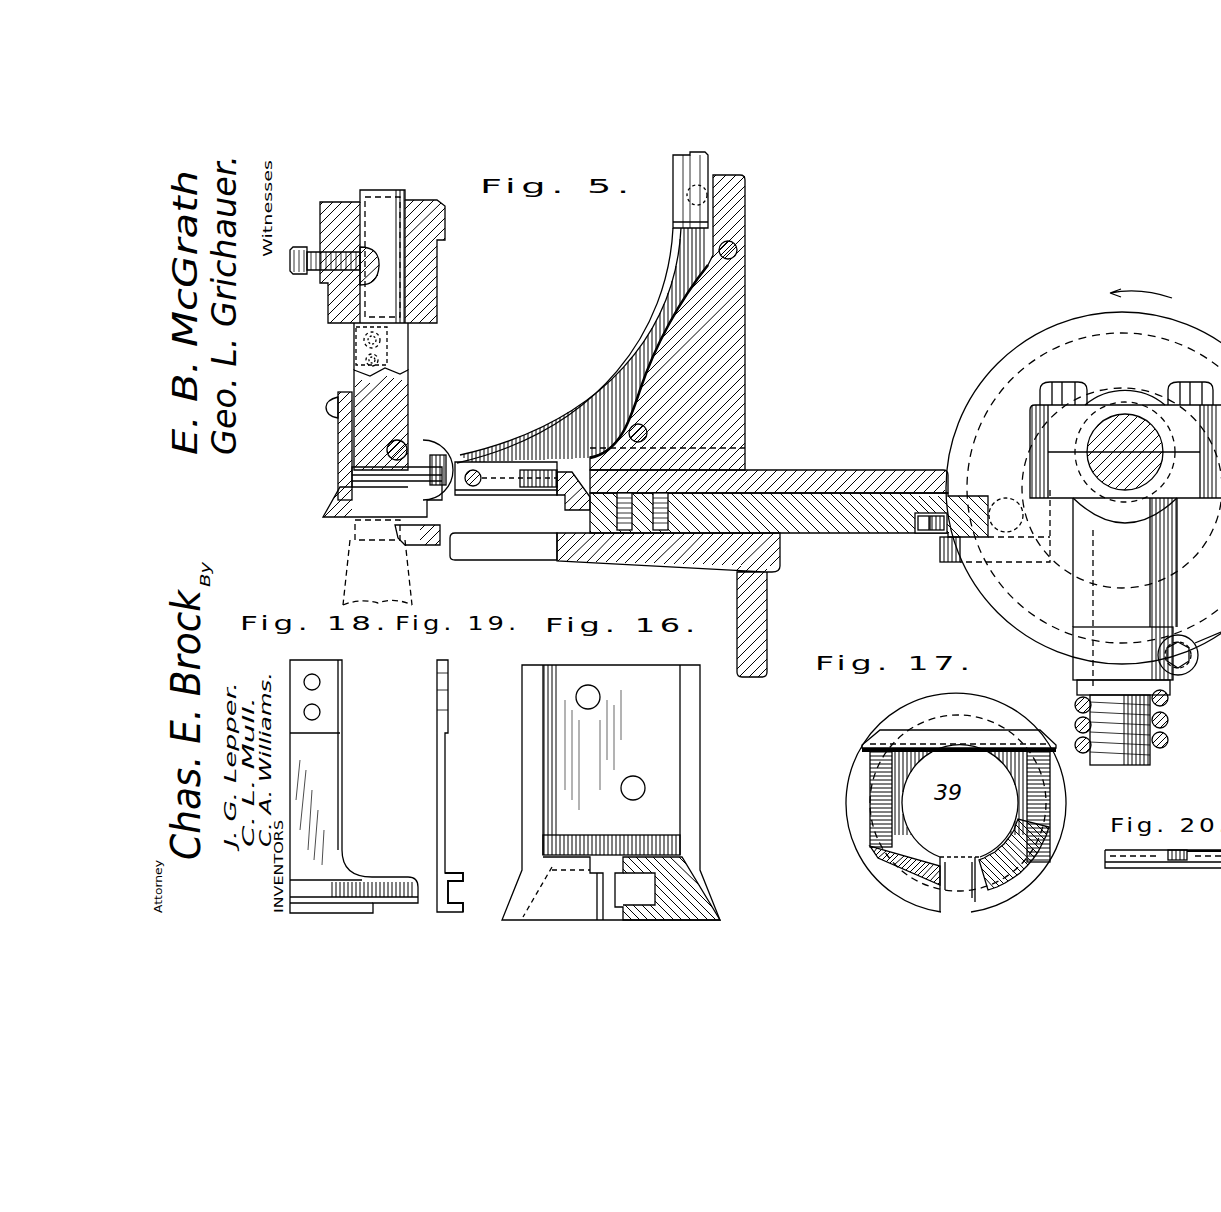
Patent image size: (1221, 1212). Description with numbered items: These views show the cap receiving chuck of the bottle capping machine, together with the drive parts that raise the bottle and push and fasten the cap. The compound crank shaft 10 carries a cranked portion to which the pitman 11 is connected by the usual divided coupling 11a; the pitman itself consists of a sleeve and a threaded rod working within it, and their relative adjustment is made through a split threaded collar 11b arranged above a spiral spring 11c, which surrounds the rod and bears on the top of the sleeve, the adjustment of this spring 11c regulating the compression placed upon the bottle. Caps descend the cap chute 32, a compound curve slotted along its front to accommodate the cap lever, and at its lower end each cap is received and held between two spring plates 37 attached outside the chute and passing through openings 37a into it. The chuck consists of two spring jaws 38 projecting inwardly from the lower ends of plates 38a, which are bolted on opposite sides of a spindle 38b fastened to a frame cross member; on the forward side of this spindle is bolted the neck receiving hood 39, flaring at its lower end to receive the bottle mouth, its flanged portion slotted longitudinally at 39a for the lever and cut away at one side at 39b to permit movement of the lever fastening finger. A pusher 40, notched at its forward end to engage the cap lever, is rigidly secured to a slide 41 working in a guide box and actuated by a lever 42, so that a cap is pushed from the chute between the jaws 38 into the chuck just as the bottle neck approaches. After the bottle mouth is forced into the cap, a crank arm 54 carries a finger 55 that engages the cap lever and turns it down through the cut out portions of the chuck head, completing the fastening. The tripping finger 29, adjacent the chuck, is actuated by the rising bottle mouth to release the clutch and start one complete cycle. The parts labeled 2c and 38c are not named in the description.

In FIG. 5, the plate 2c is at (846, 471).
In FIG. 5, the compound crank shaft 10 is at (1110, 442).
In FIG. 5, the pitman 11 is at (1128, 752).
In FIG. 5, the divided coupling 11a is at (1060, 468).
In FIG. 5, the split threaded collar 11b is at (1097, 658).
In FIG. 5, the spiral spring 11c is at (1170, 727).
In FIG. 5, the finger 29 is at (432, 546).
In FIG. 5, the cap chute 32 is at (675, 212).
In FIG. 5, the spring plates 37 is at (484, 462).
In FIG. 5, the openings 37a is at (503, 460).
In FIG. 5, the spring jaws 38 is at (410, 478).
In FIG. 18, the spring jaws 38 is at (386, 879).
In FIG. 19, the spring jaws 38 is at (448, 887).
In FIG. 20, the spring jaws 38 is at (1215, 866).
In FIG. 18, the plates 38a is at (320, 770).
In FIG. 19, the plates 38a is at (447, 764).
In FIG. 20, the plates 38a is at (1120, 865).
In FIG. 5, the spindle 38b is at (400, 346).
In FIG. 5, the bolt 38c is at (395, 447).
In FIG. 5, the neck receiving hood 39 is at (335, 500).
In FIG. 17, the neck receiving hood 39 is at (920, 740).
In FIG. 16, the neck receiving hood 39 is at (611, 792).
In FIG. 17, the longitudinal slot 39a is at (955, 880).
In FIG. 16, the longitudinal slot 39a is at (620, 890).
In FIG. 16, the cut away portion 39b is at (703, 905).
In FIG. 5, the pusher 40 is at (556, 492).
In FIG. 5, the slide 41 is at (772, 510).
In FIG. 5, the lever 42 is at (921, 535).
In FIG. 5, the crank arm 54 is at (420, 478).
In FIG. 5, the finger 55 is at (350, 461).